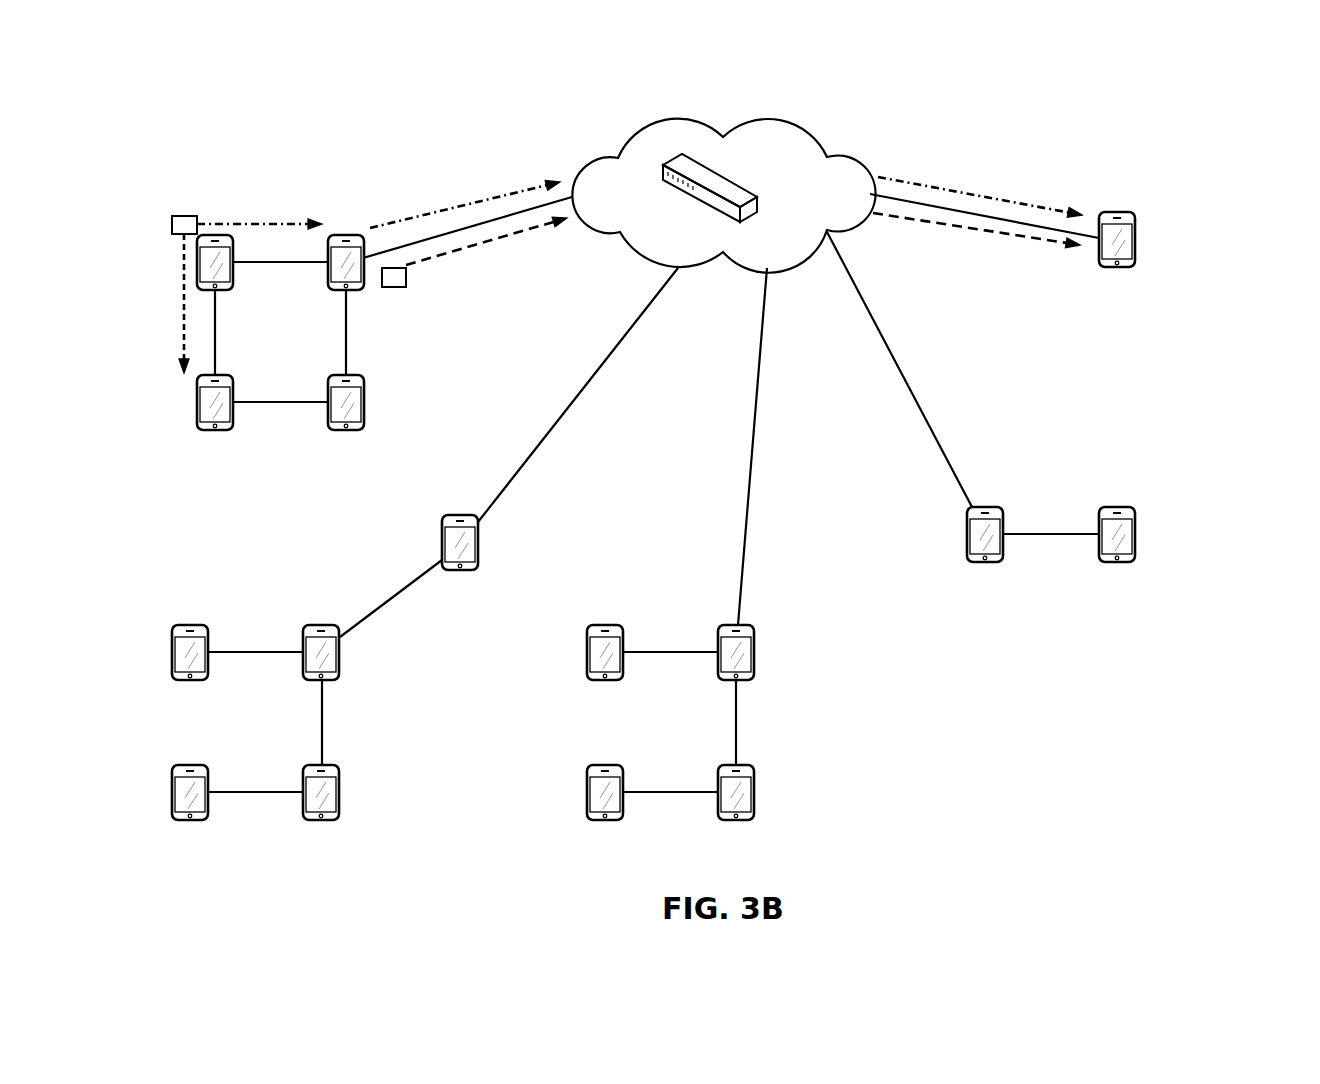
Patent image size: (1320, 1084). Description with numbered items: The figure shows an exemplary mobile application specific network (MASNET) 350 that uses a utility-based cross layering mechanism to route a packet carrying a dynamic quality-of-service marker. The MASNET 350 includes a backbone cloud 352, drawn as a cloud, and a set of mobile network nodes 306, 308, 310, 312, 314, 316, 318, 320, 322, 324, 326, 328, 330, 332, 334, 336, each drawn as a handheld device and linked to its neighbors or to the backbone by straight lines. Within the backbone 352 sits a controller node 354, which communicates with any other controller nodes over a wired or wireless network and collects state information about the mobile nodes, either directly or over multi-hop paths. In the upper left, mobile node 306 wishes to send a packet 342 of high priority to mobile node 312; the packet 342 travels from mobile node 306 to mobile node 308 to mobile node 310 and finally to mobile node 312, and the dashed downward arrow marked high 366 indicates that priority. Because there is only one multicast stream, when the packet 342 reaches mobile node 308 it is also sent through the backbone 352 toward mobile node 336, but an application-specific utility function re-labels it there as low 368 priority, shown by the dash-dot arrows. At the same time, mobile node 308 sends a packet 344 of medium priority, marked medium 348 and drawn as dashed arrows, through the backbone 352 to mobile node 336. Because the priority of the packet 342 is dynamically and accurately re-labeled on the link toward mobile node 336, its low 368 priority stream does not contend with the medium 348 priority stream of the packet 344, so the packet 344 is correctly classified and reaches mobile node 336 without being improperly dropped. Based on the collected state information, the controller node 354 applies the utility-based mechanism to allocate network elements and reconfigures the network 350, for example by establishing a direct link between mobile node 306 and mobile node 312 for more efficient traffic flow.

The mobile node 306 is at (220, 291).
The mobile node 308 is at (351, 291).
The mobile node 310 is at (351, 431).
The mobile node 312 is at (220, 431).
The mobile network node 314 is at (440, 532).
The mobile network node 316 is at (195, 681).
The mobile network node 318 is at (326, 681).
The mobile network node 320 is at (326, 821).
The mobile network node 322 is at (195, 821).
The mobile network node 324 is at (610, 681).
The mobile network node 326 is at (741, 681).
The mobile network node 328 is at (741, 821).
The mobile network node 330 is at (610, 821).
The mobile network node 332 is at (990, 563).
The mobile network node 334 is at (1122, 563).
The mobile node 336 is at (1122, 268).
The packet 342 is at (186, 216).
The packet 344 is at (406, 282).
The medium priority 348 is at (463, 247).
The mobile application specific network 350 is at (1201, 111).
The backbone cloud 352 is at (823, 150).
The controller node 354 is at (697, 203).
The high priority 366 is at (182, 333).
The low priority 368 is at (975, 174).